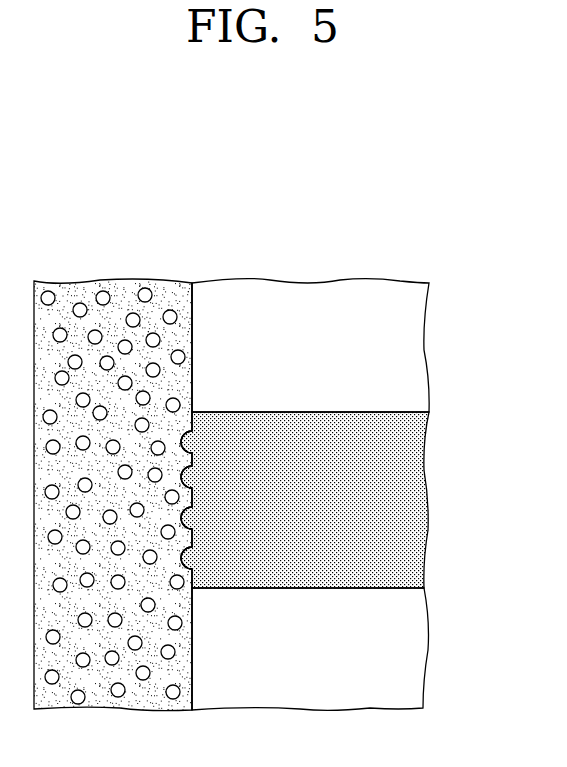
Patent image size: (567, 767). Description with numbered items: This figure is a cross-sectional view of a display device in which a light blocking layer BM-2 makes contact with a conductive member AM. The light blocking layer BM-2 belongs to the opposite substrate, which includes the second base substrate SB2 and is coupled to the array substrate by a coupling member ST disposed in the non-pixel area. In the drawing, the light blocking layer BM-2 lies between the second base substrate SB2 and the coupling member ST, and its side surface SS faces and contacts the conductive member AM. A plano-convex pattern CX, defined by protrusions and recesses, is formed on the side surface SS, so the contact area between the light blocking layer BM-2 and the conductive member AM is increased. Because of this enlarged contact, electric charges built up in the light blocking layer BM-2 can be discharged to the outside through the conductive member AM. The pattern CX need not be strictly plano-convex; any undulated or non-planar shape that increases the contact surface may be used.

The conductive member AM is at (124, 280).
The plano-convex pattern CX is at (185, 443).
The side surface SS is at (195, 463).
The second base substrate SB2 is at (413, 349).
The light blocking layer BM-2 is at (413, 503).
The coupling member ST is at (413, 655).